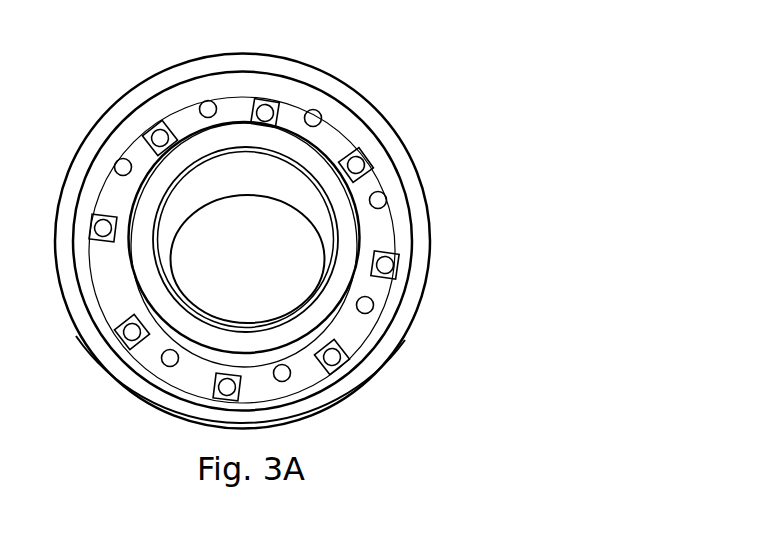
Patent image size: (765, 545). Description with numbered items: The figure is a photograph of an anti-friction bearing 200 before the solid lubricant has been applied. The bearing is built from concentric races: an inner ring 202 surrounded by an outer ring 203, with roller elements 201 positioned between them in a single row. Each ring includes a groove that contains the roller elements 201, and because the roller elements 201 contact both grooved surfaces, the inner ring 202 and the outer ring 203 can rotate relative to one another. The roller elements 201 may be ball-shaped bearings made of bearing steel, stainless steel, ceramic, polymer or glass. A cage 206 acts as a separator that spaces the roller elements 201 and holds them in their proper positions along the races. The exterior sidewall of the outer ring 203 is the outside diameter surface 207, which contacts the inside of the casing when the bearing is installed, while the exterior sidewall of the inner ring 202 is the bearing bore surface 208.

The anti-friction bearing 200 is at (328, 54).
The roller elements 201 is at (313, 118).
The inner ring 202 is at (323, 168).
The outer ring 203 is at (410, 167).
The cage 206 is at (385, 263).
The outside diameter surface 207 is at (430, 197).
The bearing bore surface 208 is at (190, 290).